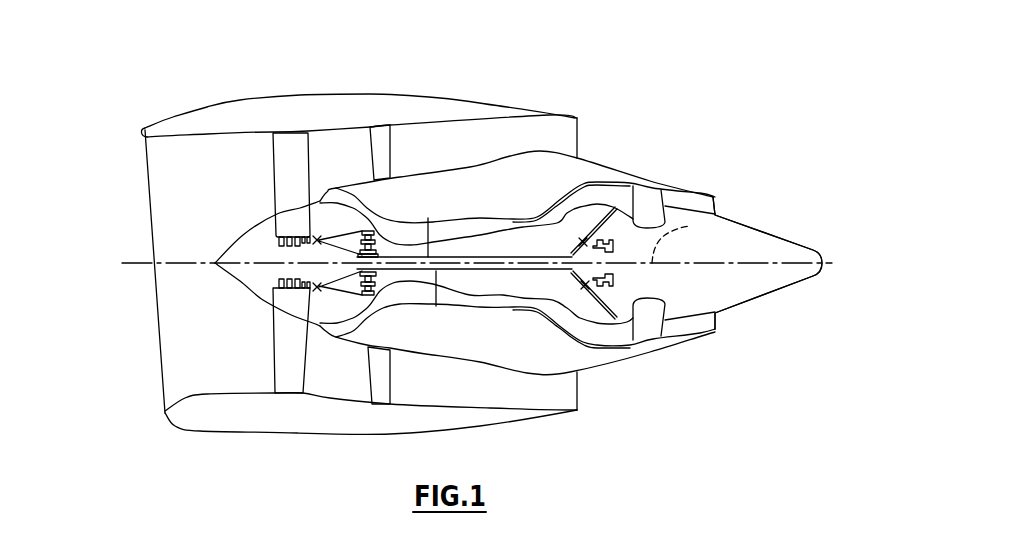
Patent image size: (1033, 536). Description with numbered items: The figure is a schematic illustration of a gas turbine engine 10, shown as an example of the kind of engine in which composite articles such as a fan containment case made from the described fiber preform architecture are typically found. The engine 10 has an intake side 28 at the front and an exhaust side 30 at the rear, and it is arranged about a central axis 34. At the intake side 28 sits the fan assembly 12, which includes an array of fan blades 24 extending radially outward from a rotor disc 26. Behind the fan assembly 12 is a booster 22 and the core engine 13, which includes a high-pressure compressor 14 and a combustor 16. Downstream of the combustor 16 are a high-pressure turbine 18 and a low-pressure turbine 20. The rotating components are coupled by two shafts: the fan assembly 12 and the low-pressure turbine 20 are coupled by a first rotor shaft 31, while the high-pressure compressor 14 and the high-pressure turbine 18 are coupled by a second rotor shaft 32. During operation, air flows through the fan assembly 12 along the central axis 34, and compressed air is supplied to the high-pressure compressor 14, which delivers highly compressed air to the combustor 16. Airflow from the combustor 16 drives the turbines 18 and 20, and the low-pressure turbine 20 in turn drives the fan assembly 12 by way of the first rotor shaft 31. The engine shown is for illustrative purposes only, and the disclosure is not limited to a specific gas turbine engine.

The gas turbine engine 10 is at (512, 64).
The fan assembly 12 is at (285, 352).
The core engine 13 is at (465, 172).
The high-pressure compressor 14 is at (388, 225).
The combustor 16 is at (512, 222).
The high-pressure turbine 18 is at (539, 319).
The low-pressure turbine 20 is at (593, 197).
The booster 22 is at (352, 203).
The fan blades 24 is at (278, 173).
The rotor disc 26 is at (260, 280).
The intake side 28 is at (128, 150).
The exhaust side 30 is at (602, 119).
The first rotor shaft 31 is at (428, 220).
The second rotor shaft 32 is at (436, 306).
The central axis 34 is at (684, 227).